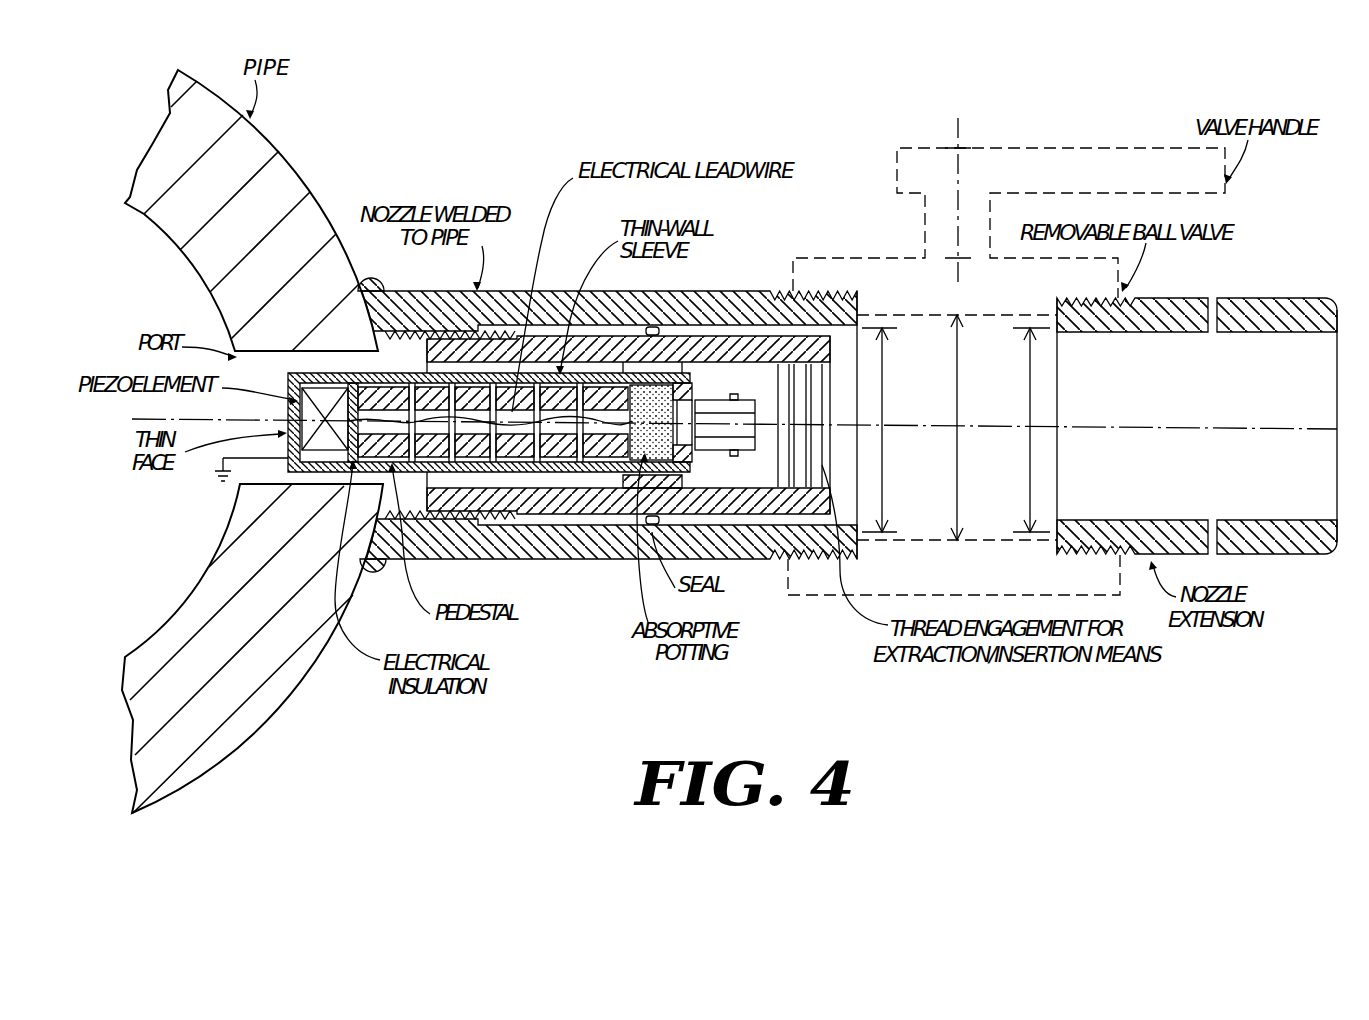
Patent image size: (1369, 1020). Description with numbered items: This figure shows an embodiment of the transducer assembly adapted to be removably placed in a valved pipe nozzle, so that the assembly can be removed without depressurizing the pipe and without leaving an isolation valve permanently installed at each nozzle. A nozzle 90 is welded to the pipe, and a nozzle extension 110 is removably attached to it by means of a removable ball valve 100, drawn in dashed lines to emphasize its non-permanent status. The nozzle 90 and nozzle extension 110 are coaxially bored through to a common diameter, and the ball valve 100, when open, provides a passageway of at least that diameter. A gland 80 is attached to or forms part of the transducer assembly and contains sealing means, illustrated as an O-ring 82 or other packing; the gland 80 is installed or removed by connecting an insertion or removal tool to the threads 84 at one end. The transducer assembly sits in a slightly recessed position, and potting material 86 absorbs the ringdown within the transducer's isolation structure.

The gland 80 is at (544, 322).
The O-ring 82 is at (655, 326).
The threads 84 is at (802, 376).
The potting material 86 is at (578, 557).
The nozzle 90 is at (710, 291).
The removable ball valve 100 is at (1017, 301).
The nozzle extension 110 is at (1262, 312).